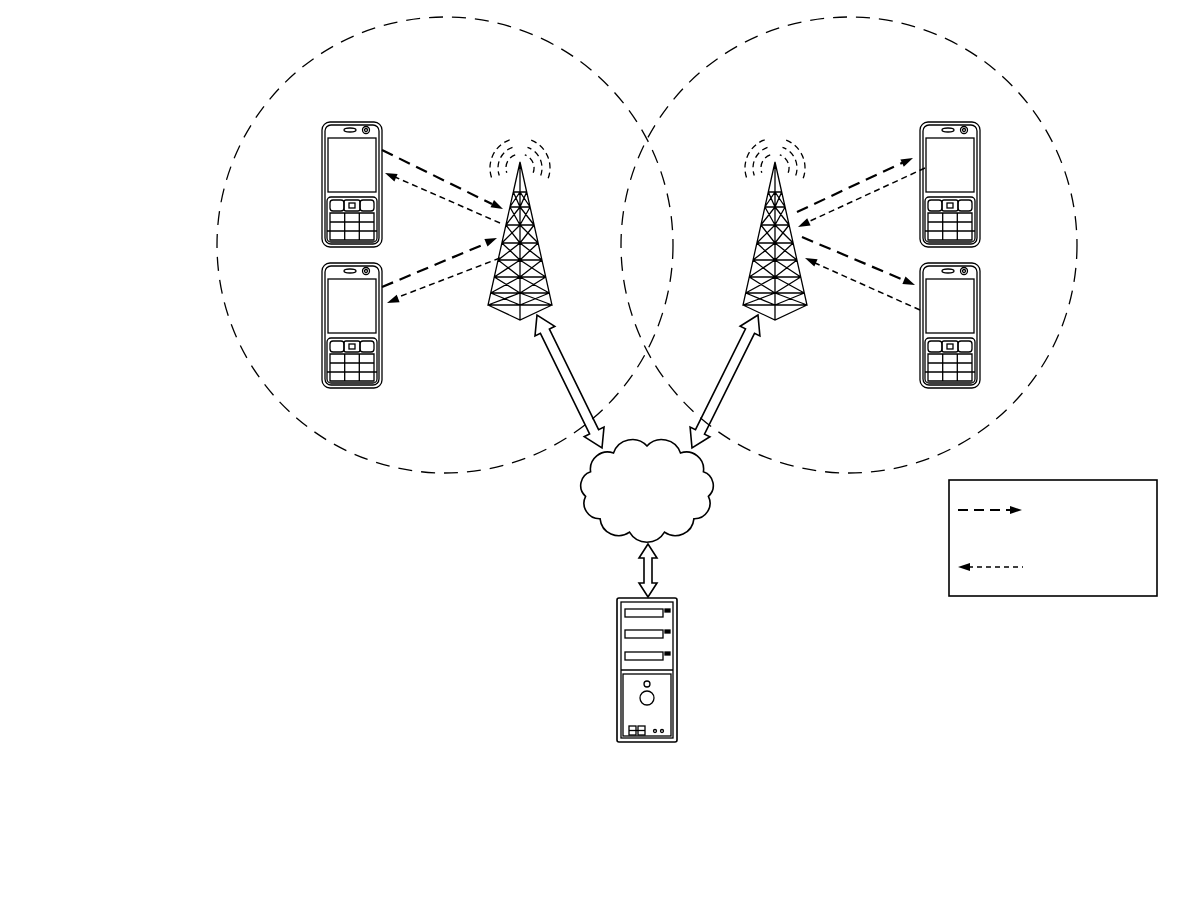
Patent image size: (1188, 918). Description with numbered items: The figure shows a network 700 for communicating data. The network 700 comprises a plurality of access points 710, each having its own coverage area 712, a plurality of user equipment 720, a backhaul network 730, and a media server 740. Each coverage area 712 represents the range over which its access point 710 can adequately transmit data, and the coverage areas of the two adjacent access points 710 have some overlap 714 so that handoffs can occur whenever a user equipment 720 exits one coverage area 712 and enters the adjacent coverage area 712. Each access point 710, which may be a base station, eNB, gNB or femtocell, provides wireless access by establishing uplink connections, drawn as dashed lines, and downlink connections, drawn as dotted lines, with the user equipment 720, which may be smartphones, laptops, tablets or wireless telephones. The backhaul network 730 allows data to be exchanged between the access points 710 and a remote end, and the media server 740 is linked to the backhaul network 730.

The network 700 is at (305, 668).
The access point 710 is at (505, 314).
The coverage area 712 is at (218, 222).
The overlap 714 is at (666, 237).
The user equipment 720 is at (322, 186).
The backhaul network 730 is at (716, 490).
The media server 740 is at (677, 670).